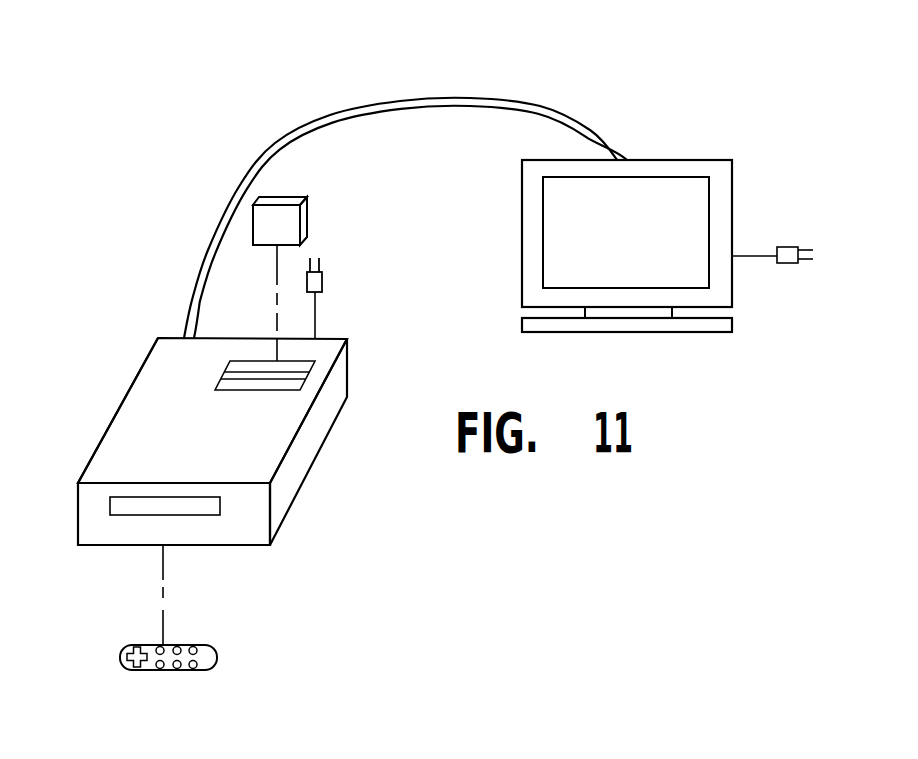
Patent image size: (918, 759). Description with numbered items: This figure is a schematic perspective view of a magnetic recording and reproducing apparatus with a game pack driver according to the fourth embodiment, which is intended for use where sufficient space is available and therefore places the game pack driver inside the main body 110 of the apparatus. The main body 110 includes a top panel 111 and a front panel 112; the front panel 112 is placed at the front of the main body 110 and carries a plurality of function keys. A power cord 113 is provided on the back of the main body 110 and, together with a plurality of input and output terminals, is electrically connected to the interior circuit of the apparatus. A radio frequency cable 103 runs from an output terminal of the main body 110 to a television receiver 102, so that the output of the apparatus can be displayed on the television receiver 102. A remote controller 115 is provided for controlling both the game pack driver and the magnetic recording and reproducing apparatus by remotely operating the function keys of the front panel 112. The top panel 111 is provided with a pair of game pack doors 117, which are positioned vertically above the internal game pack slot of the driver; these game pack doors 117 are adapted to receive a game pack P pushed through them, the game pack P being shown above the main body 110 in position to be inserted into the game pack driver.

The television receiver 102 is at (688, 160).
The radio frequency cable 103 is at (421, 98).
The main body 110 is at (291, 526).
The top panel 111 is at (151, 373).
The front panel 112 is at (80, 541).
The power cord 113 is at (323, 281).
The remote controller 115 is at (217, 657).
The game pack door 117 is at (297, 381).
The game pack P is at (295, 201).